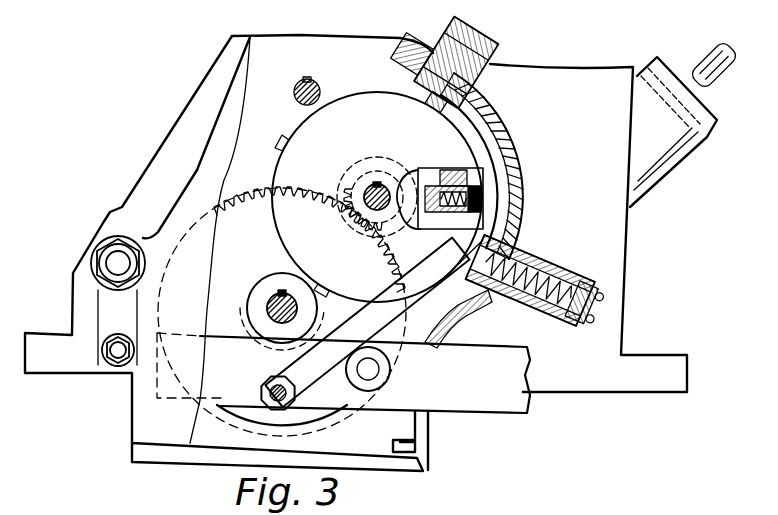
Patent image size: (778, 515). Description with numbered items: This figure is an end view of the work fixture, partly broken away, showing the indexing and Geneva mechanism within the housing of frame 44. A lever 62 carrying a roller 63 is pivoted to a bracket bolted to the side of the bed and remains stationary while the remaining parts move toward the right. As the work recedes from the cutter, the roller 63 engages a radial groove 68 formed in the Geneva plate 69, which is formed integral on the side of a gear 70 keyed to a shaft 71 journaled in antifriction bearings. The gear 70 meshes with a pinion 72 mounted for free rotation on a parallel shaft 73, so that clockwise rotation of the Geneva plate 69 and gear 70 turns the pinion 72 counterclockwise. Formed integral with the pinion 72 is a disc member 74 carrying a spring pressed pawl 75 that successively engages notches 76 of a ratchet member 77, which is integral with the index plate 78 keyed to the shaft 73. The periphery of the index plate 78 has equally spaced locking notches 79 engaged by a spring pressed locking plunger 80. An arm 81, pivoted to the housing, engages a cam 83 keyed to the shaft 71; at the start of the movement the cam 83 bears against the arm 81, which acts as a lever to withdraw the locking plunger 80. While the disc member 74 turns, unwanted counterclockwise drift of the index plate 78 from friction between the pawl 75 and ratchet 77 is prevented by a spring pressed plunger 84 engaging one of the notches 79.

The frame 44 is at (618, 229).
The lever 62 is at (497, 410).
The roller 63 is at (374, 383).
The radial groove 68 is at (346, 368).
The Geneva plate 69 is at (253, 409).
The gear 70 is at (253, 201).
The shaft 71 is at (264, 308).
The pinion 72 is at (358, 190).
The shaft 73 is at (389, 188).
The disc member 74 is at (488, 171).
The spring pressed pawl 75 is at (430, 188).
The notches 76 is at (377, 156).
The ratchet member 77 is at (421, 178).
The index plate 78 is at (360, 98).
The locking notches 79 is at (283, 147).
The spring pressed locking plunger 80 is at (524, 205).
The arm 81 is at (459, 302).
The cam 83 is at (262, 291).
The spring pressed plunger 84 is at (425, 53).